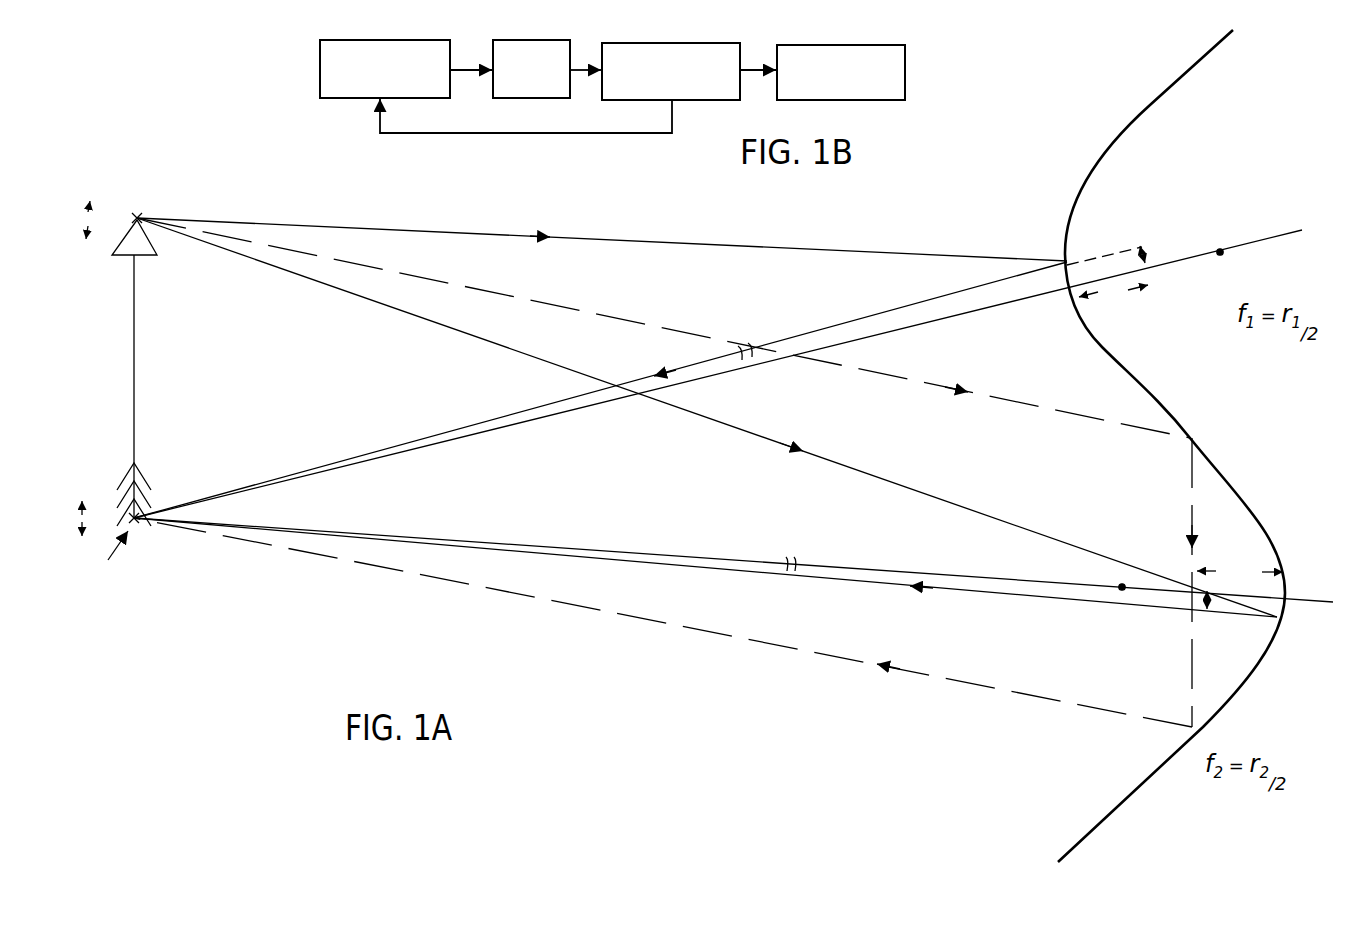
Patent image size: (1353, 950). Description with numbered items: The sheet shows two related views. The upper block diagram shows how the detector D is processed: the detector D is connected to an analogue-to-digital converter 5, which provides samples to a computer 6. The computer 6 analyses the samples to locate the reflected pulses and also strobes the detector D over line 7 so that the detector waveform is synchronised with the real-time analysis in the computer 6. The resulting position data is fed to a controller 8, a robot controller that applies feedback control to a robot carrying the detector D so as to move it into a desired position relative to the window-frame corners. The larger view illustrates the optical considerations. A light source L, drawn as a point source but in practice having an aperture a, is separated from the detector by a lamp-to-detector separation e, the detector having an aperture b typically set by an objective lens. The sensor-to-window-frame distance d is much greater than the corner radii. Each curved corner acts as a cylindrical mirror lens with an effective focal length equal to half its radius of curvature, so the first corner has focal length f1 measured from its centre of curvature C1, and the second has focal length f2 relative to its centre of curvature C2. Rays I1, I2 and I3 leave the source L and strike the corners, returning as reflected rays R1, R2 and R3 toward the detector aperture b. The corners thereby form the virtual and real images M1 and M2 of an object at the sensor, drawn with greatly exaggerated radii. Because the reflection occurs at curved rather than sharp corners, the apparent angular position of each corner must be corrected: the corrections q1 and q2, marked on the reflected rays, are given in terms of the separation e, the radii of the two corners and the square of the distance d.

In FIG. 1B, the detector D is at (338, 98).
In FIG. 1B, the analogue-to-digital converter 5 is at (495, 40).
In FIG. 1B, the computer 6 is at (604, 43).
In FIG. 1B, the strobe line 7 is at (590, 133).
In FIG. 1B, the controller 8 is at (778, 45).
In FIG. 1A, the point source L is at (148, 206).
In FIG. 1A, the aperture of light source a is at (73, 220).
In FIG. 1A, the aperture of detector b is at (101, 511).
In FIG. 1A, the lamp to detector separation e is at (134, 355).
In FIG. 1A, the sensor to window frame distance d is at (597, 237).
In FIG. 1A, the incident ray I1 is at (602, 223).
In FIG. 1A, the incident ray I2 is at (707, 417).
In FIG. 1A, the incident ray I3 is at (663, 328).
In FIG. 1A, the reflected ray R1 is at (353, 458).
In FIG. 1A, the reflected ray R2 is at (423, 547).
In FIG. 1A, the reflected ray R3 is at (291, 553).
In FIG. 1A, the angular position correction q1 is at (755, 360).
In FIG. 1A, the angular position correction q2 is at (797, 570).
In FIG. 1A, the virtual image M1 is at (1154, 249).
In FIG. 1A, the real image M2 is at (1212, 622).
In FIG. 1A, the centre of curvature C1 is at (718, 369).
In FIG. 1A, the centre of curvature C2 is at (1117, 587).
In FIG. 1A, the effective focal length f1 is at (1113, 300).
In FIG. 1A, the effective focal length f2 is at (1240, 577).